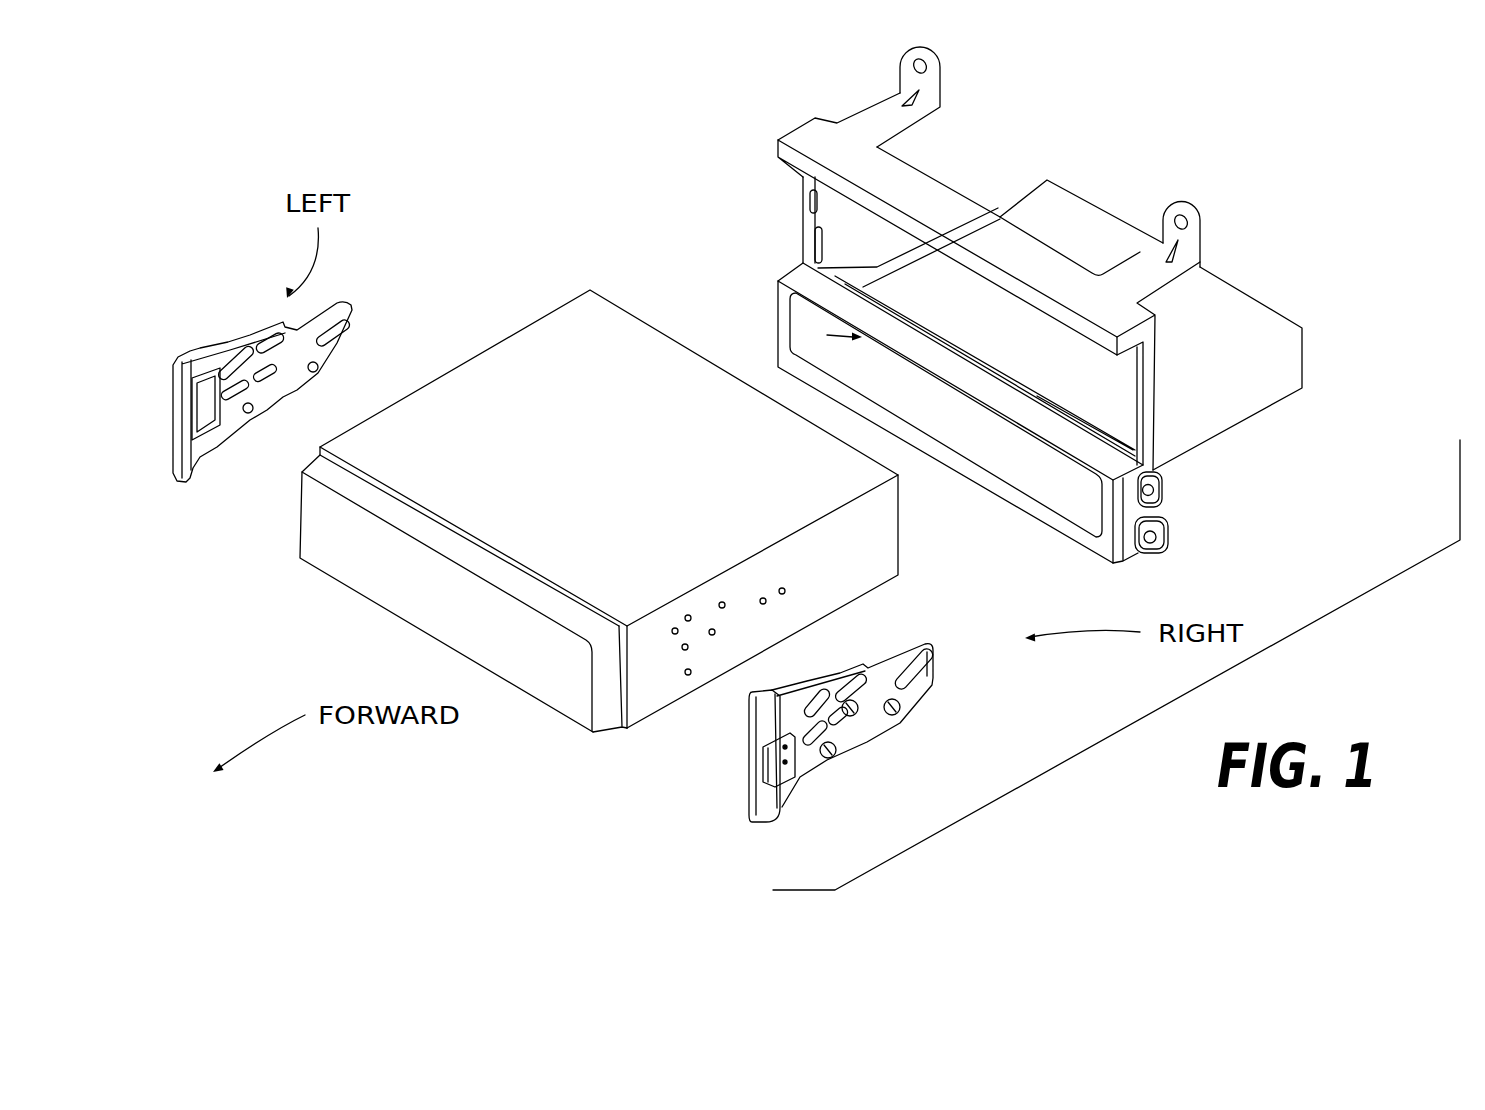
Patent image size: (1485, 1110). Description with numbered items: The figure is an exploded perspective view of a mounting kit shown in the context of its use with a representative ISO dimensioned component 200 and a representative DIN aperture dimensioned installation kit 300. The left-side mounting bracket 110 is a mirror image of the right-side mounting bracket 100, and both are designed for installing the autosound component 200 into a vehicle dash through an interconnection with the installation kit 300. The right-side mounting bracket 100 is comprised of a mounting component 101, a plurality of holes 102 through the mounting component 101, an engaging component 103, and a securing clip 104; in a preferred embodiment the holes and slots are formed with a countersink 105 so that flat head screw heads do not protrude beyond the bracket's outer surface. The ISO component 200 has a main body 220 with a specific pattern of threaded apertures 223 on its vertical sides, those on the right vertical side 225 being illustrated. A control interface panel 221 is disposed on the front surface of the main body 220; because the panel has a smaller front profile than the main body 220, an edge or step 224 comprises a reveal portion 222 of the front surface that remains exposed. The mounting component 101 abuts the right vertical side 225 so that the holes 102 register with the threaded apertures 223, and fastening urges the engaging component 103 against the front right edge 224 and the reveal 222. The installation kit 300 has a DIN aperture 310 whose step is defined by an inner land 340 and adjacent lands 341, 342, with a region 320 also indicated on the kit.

The right-side mounting bracket 100 is at (856, 652).
The mounting component 101 is at (947, 683).
The holes 102 is at (835, 756).
The engaging component 103 is at (749, 833).
The securing clip 104 is at (799, 772).
The countersink 105 is at (878, 665).
The left-side mounting bracket 110 is at (203, 352).
The ISO component 200 is at (633, 469).
The main body 220 is at (496, 340).
The control interface panel 221 is at (460, 609).
The reveal portion 222 is at (618, 724).
The threaded apertures 223 is at (763, 605).
The front right edge 224 is at (635, 667).
The right vertical side 225 is at (878, 559).
The installation kit 300 is at (1000, 240).
The DIN aperture 310 is at (796, 240).
The sleeve side wall front edge 320 is at (805, 256).
The inner land 340 is at (794, 198).
The land 341 is at (808, 175).
The land 342 is at (830, 212).